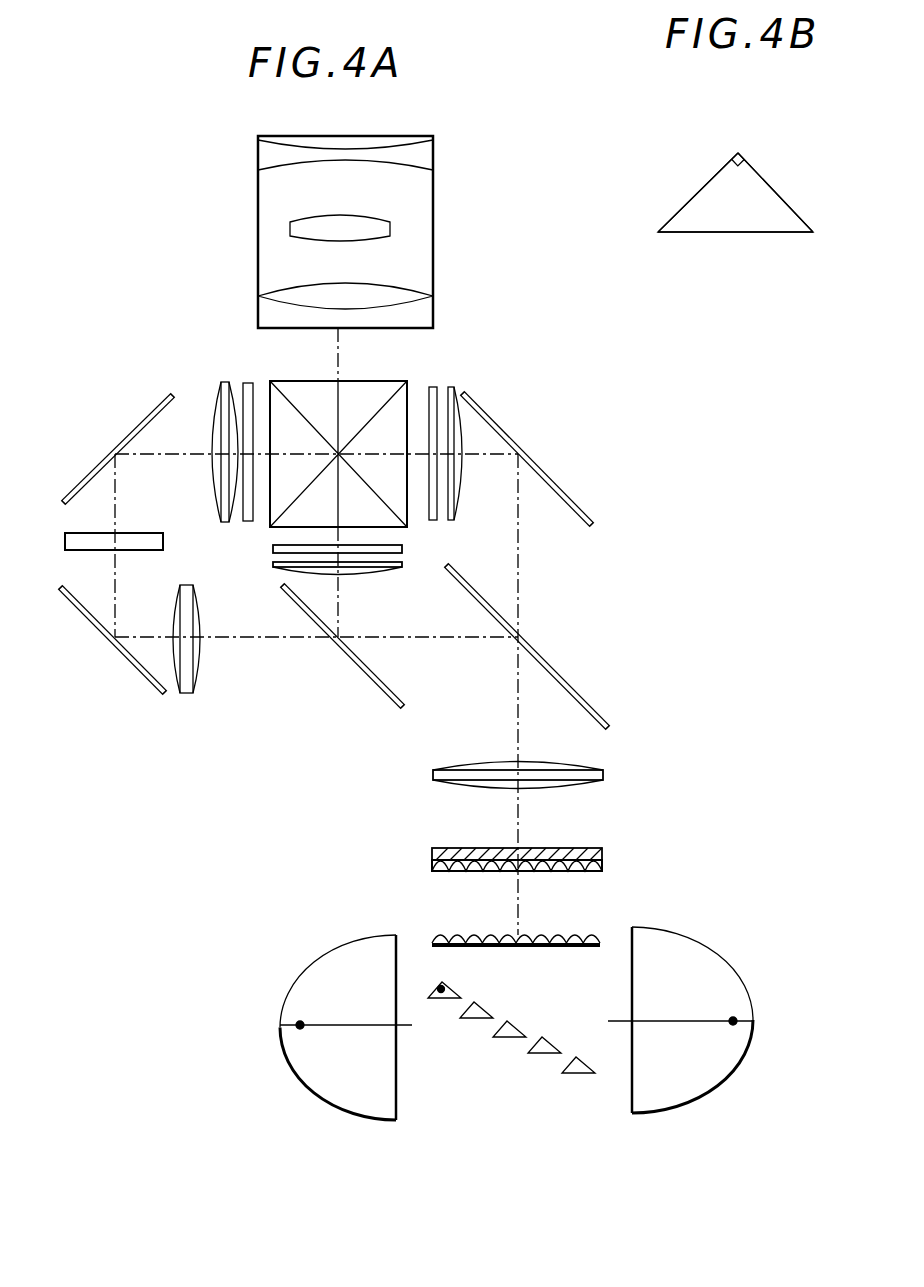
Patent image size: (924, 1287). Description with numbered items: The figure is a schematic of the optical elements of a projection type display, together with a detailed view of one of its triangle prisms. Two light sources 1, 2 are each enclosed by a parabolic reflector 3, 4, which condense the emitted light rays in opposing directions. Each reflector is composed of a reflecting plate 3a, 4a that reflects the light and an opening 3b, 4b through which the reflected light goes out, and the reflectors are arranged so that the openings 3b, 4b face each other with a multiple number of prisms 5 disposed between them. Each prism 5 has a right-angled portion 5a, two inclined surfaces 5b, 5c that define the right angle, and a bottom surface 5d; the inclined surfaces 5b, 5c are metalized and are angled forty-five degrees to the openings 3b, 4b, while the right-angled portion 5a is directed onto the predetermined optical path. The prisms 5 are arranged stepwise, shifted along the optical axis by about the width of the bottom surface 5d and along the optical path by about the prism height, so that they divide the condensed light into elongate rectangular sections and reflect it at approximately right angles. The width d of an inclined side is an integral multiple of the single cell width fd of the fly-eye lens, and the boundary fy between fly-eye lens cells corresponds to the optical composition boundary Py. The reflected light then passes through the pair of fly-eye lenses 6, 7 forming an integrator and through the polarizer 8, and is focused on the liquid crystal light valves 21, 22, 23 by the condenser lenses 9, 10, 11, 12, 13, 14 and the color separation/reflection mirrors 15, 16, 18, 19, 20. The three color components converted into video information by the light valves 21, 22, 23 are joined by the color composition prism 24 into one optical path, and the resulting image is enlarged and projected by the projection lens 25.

In FIG. 4A, the light source 1 is at (298, 1030).
In FIG. 4A, the light source 2 is at (740, 1028).
In FIG. 4A, the parabolic reflector 3 is at (316, 1094).
In FIG. 4A, the reflecting plate 3a is at (302, 975).
In FIG. 4A, the opening 3b is at (398, 1075).
In FIG. 4A, the parabolic reflector 4 is at (703, 1095).
In FIG. 4A, the reflecting plate 4a is at (722, 962).
In FIG. 4A, the opening 4b is at (630, 1070).
In FIG. 4A, the prism 5 is at (450, 984).
In FIG. 4B, the right-angled portion 5a is at (738, 150).
In FIG. 4B, the inclined surface 5b is at (700, 190).
In FIG. 4B, the inclined surface 5c is at (778, 196).
In FIG. 4B, the bottom surface 5d is at (742, 234).
In FIG. 4A, the fly-eye lens 6 is at (595, 937).
In FIG. 4A, the fly-eye lens 7 is at (602, 867).
In FIG. 4A, the polarizer 8 is at (600, 848).
In FIG. 4A, the condenser lens 9 is at (590, 767).
In FIG. 4A, the condenser lens 10 is at (458, 390).
In FIG. 4A, the condenser lens 11 is at (358, 573).
In FIG. 4A, the condenser lens 12 is at (188, 693).
In FIG. 4A, the condenser lens 13 is at (65, 541).
In FIG. 4A, the condenser lens 14 is at (218, 382).
In FIG. 4A, the color separation/reflection mirror 15 is at (590, 710).
In FIG. 4A, the color separation/reflection mirror 16 is at (370, 674).
In FIG. 4A, the color separation/reflection mirror 18 is at (130, 658).
In FIG. 4A, the color separation/reflection mirror 19 is at (560, 495).
In FIG. 4A, the color separation/reflection mirror 20 is at (150, 412).
In FIG. 4A, the liquid crystal light valve 21 is at (434, 387).
In FIG. 4A, the liquid crystal light valve 22 is at (402, 549).
In FIG. 4A, the liquid crystal light valve 23 is at (248, 383).
In FIG. 4A, the color composition prism 24 is at (378, 381).
In FIG. 4A, the projection lens 25 is at (433, 185).
In FIG. 4A, the optical composition boundary Py is at (441, 993).
In FIG. 4A, the width of the inclined side d is at (460, 972).
In FIG. 4A, the single cell width of the fly-eye lens fd is at (466, 915).
In FIG. 4A, the boundary between fly-eye lens cells fy is at (445, 935).